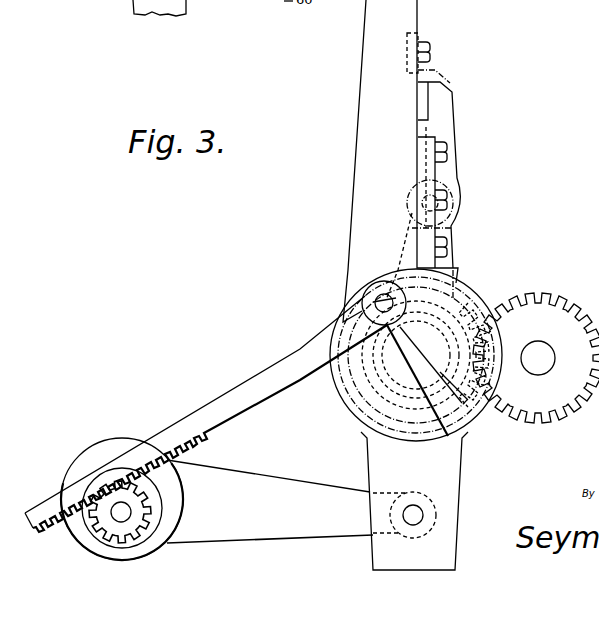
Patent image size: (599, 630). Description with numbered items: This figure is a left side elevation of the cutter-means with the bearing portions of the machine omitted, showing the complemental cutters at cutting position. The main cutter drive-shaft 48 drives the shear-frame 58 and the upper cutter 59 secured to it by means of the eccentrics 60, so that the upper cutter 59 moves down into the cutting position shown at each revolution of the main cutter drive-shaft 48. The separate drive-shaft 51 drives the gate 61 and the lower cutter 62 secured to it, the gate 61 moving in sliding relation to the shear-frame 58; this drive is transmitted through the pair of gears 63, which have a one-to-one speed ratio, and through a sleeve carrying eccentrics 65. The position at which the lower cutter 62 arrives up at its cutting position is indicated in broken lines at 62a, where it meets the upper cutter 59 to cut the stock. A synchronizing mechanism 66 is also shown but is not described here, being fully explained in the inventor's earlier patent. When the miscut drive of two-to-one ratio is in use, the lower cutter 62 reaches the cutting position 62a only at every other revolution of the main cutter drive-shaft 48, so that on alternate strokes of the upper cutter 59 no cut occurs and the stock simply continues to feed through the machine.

The main cutter drive-shaft 48 is at (412, 392).
The drive-shaft 51 is at (540, 375).
The shear-frame 58 is at (358, 78).
The upper cutter 59 is at (413, 40).
The eccentrics 60 is at (376, 387).
The gate 61 is at (455, 127).
The lower cutter 62 is at (420, 103).
The cutting position of lower cutter 62a is at (439, 75).
The pair of gears 63 is at (468, 400).
The eccentrics 65 is at (390, 392).
The synchronizing mechanism 66 is at (283, 478).